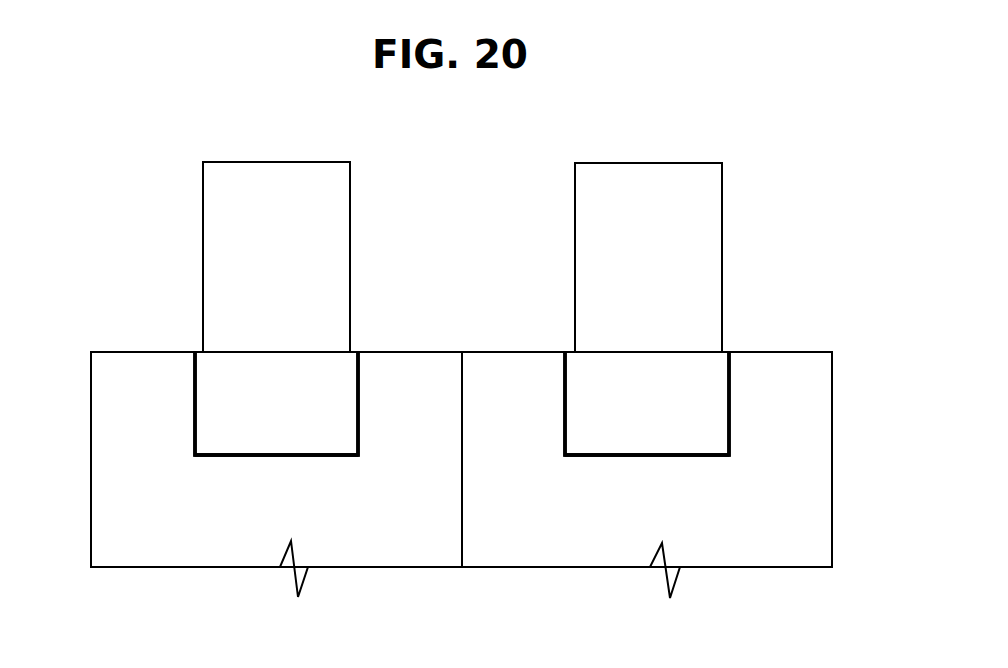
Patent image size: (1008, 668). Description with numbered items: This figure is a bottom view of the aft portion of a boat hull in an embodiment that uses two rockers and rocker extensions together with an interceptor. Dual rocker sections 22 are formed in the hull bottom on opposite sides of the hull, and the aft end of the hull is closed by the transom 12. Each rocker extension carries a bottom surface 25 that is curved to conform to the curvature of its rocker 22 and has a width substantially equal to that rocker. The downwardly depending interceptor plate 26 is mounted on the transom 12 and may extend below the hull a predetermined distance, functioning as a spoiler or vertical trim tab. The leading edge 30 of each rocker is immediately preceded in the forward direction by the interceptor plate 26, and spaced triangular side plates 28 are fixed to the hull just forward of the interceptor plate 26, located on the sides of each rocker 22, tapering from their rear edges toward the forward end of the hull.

The transom 12 is at (803, 353).
The rocker section 22 is at (462, 403).
The bottom surface of rocker extension 25 is at (256, 188).
The interceptor plate 26 is at (462, 403).
The side plates 28 is at (123, 415).
The leading edge of the rocker 30 is at (278, 458).